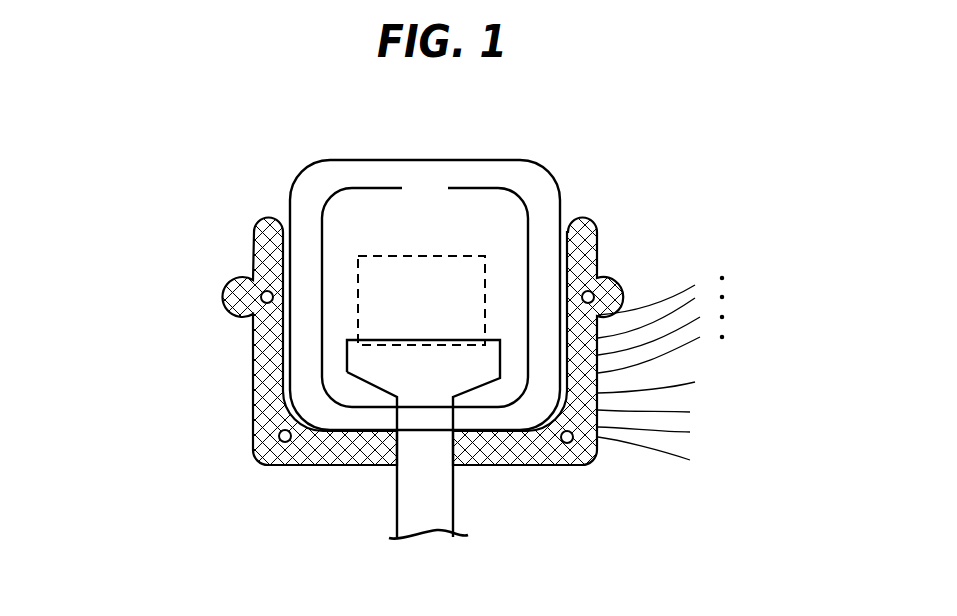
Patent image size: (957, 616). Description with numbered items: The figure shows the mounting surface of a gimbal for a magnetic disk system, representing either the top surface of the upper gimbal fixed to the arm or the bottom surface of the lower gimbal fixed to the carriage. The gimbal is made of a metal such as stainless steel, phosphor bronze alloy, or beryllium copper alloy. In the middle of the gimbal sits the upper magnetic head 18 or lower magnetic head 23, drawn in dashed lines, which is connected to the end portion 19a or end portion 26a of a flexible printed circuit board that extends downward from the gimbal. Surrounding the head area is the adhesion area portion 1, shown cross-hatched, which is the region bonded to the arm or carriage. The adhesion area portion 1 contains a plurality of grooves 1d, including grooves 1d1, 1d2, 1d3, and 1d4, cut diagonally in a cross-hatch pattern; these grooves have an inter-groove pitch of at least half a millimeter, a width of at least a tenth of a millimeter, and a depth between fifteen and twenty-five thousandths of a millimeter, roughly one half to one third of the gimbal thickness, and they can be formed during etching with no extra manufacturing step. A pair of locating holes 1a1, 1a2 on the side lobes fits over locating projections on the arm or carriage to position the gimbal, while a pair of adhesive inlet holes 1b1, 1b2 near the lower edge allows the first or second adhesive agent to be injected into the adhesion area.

The adhesion area portion 1 is at (248, 229).
The locating hole 1a1 is at (261, 297).
The locating hole 1a2 is at (613, 278).
The adhesive inlet hole 1b1 is at (290, 443).
The adhesive inlet hole 1b2 is at (593, 462).
The grooves 1d is at (707, 379).
The groove 1d1 is at (669, 458).
The groove 1d2 is at (669, 434).
The groove 1d3 is at (669, 407).
The groove 1d4 is at (669, 377).
The upper magnetic head 18 is at (502, 227).
The lower magnetic head 23 is at (470, 256).
The end portion of the flexible printed circuit board 19a is at (494, 459).
The end portion of the flexible printed circuit board 26a is at (447, 490).